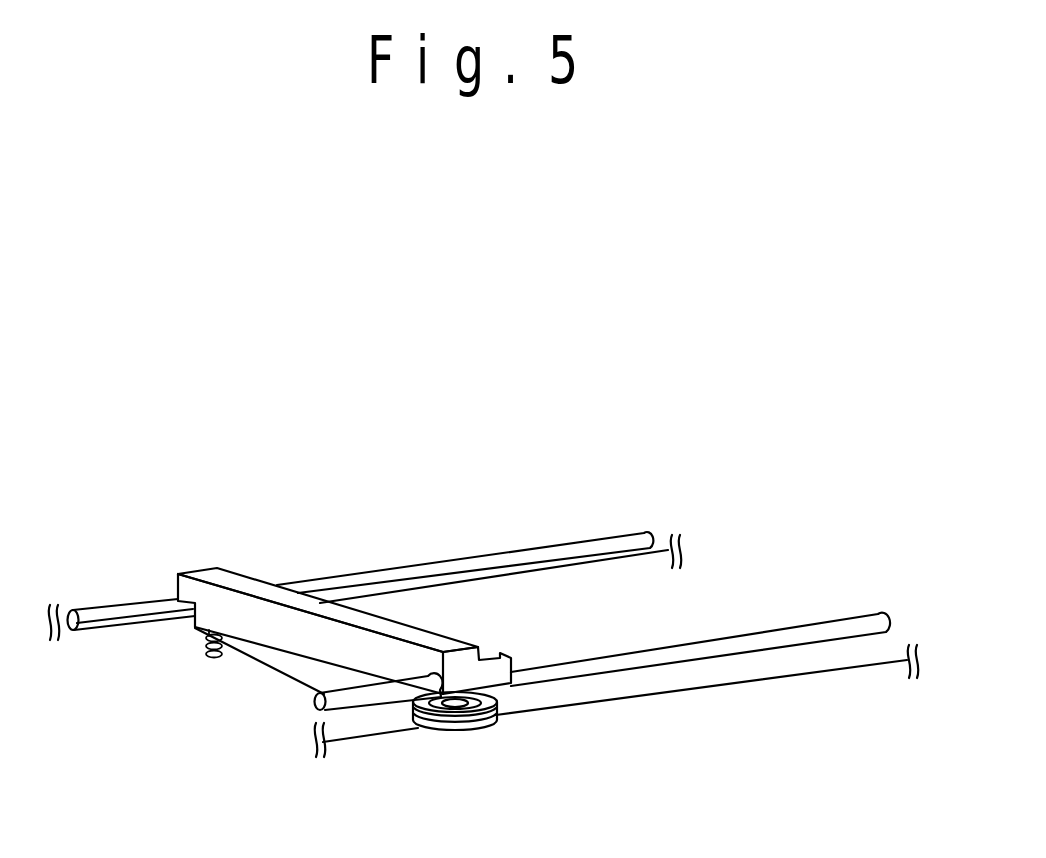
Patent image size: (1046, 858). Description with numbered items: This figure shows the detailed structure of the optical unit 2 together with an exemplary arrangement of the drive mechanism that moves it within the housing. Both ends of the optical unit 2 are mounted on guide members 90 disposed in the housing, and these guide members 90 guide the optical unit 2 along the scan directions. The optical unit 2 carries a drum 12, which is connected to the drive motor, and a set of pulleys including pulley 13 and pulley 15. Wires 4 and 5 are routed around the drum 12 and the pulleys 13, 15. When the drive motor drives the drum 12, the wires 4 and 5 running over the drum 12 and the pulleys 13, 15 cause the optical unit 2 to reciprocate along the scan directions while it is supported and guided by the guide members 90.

The optical unit 2 is at (256, 590).
The wire 4 is at (535, 574).
The wire 5 is at (73, 638).
The drum 12 is at (470, 735).
The pulley 13 is at (203, 637).
The pulley 15 is at (212, 656).
The guide member 90 is at (557, 550).